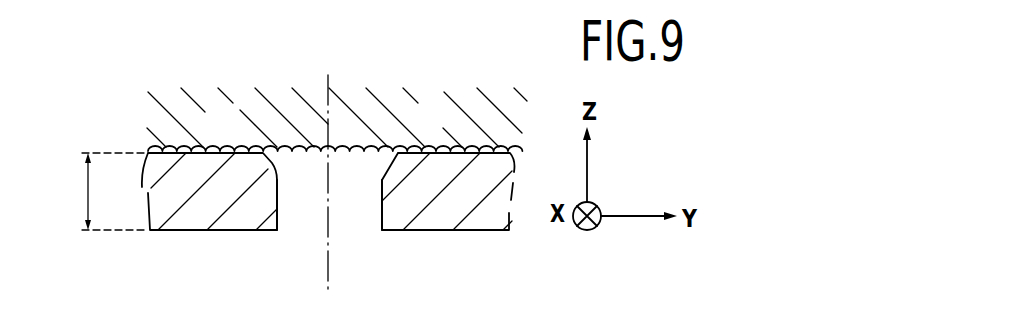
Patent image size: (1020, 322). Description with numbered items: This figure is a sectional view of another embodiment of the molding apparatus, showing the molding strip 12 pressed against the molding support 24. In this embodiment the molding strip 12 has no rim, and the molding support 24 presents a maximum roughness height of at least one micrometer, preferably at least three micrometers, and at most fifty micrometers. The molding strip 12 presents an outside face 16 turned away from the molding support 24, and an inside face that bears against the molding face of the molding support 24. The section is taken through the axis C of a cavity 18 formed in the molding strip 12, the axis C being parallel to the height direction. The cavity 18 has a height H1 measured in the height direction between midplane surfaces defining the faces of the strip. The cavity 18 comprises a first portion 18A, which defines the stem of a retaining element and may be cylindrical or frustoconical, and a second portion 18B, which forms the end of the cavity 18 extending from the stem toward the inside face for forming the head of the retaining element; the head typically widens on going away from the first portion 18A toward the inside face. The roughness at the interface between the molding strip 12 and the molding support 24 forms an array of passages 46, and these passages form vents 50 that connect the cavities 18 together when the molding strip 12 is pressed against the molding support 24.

The molding strip 12 is at (160, 202).
The outside face 16 is at (476, 237).
The cavity 18 is at (348, 203).
The first portion 18A is at (275, 232).
The second portion 18B is at (385, 172).
The molding support 24 is at (445, 91).
The array of passages 46 is at (303, 162).
The vents 50 is at (241, 148).
The height of the cavity H1 is at (104, 191).
The axis of the cavity C is at (327, 61).